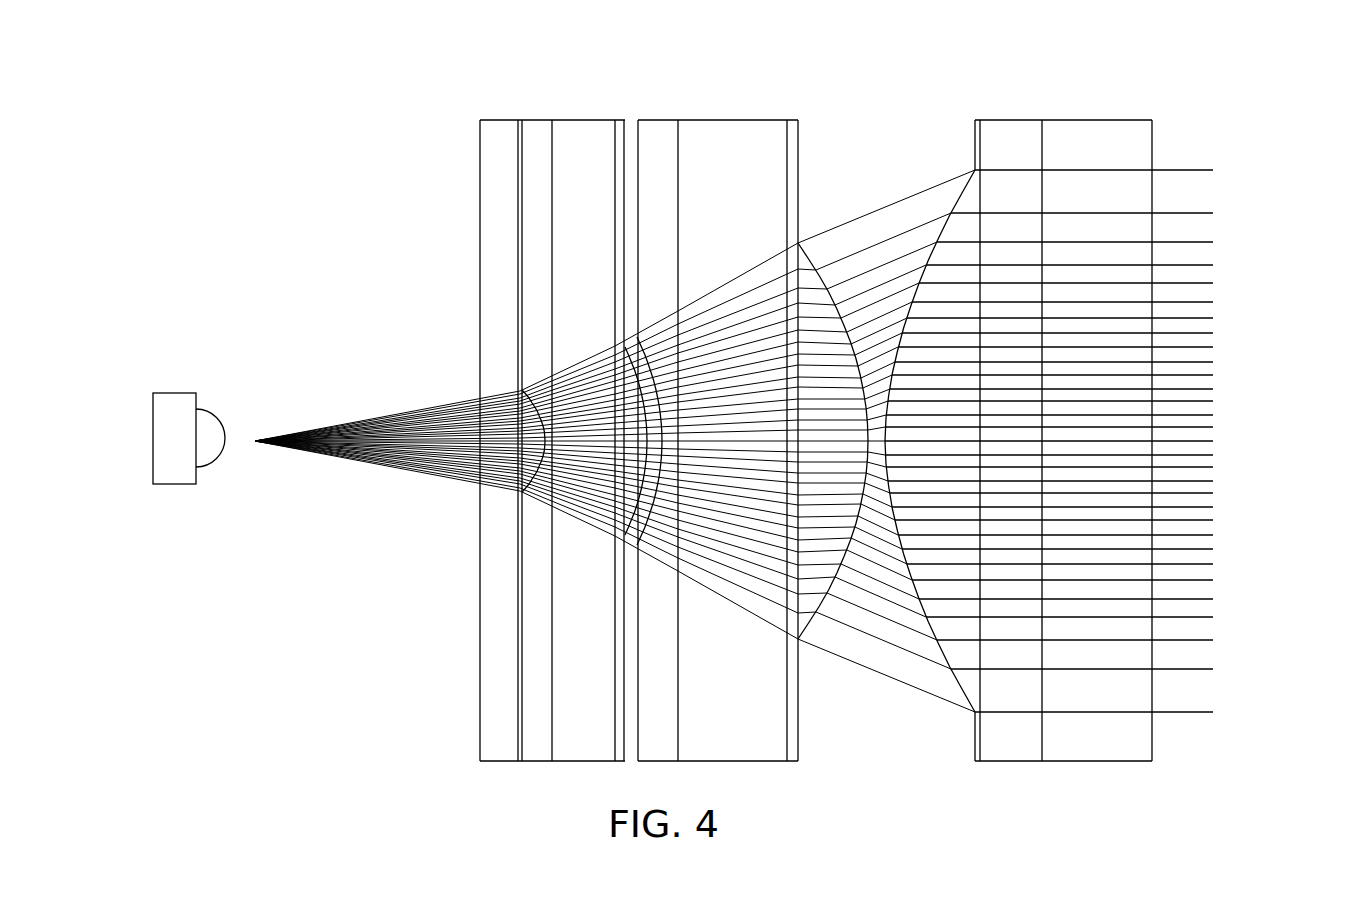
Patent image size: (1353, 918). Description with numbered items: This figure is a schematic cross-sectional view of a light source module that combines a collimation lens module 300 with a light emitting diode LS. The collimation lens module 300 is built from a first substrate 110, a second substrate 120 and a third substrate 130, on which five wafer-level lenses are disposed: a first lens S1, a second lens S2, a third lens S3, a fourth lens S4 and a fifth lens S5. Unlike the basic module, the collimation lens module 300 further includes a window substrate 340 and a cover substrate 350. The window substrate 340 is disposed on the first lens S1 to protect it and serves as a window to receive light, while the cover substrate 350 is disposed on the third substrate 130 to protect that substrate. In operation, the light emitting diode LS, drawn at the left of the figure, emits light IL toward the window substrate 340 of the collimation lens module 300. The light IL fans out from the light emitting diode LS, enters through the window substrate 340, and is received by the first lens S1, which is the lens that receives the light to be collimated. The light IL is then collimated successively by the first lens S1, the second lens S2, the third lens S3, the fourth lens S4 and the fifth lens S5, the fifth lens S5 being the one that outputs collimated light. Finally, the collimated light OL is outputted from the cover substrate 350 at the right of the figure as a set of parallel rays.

The collimation lens module 300 is at (440, 61).
The window substrate 340 is at (502, 133).
The first lens S1 is at (537, 130).
The first substrate 110 is at (587, 133).
The second lens S2 is at (618, 130).
The third lens S3 is at (657, 133).
The second substrate 120 is at (725, 133).
The fourth lens S4 is at (791, 130).
The fifth lens S5 is at (975, 130).
The third substrate 130 is at (1015, 133).
The cover substrate 350 is at (1100, 133).
The light emitting diode LS is at (132, 377).
The light IL is at (412, 482).
The collimated light OL is at (1247, 167).